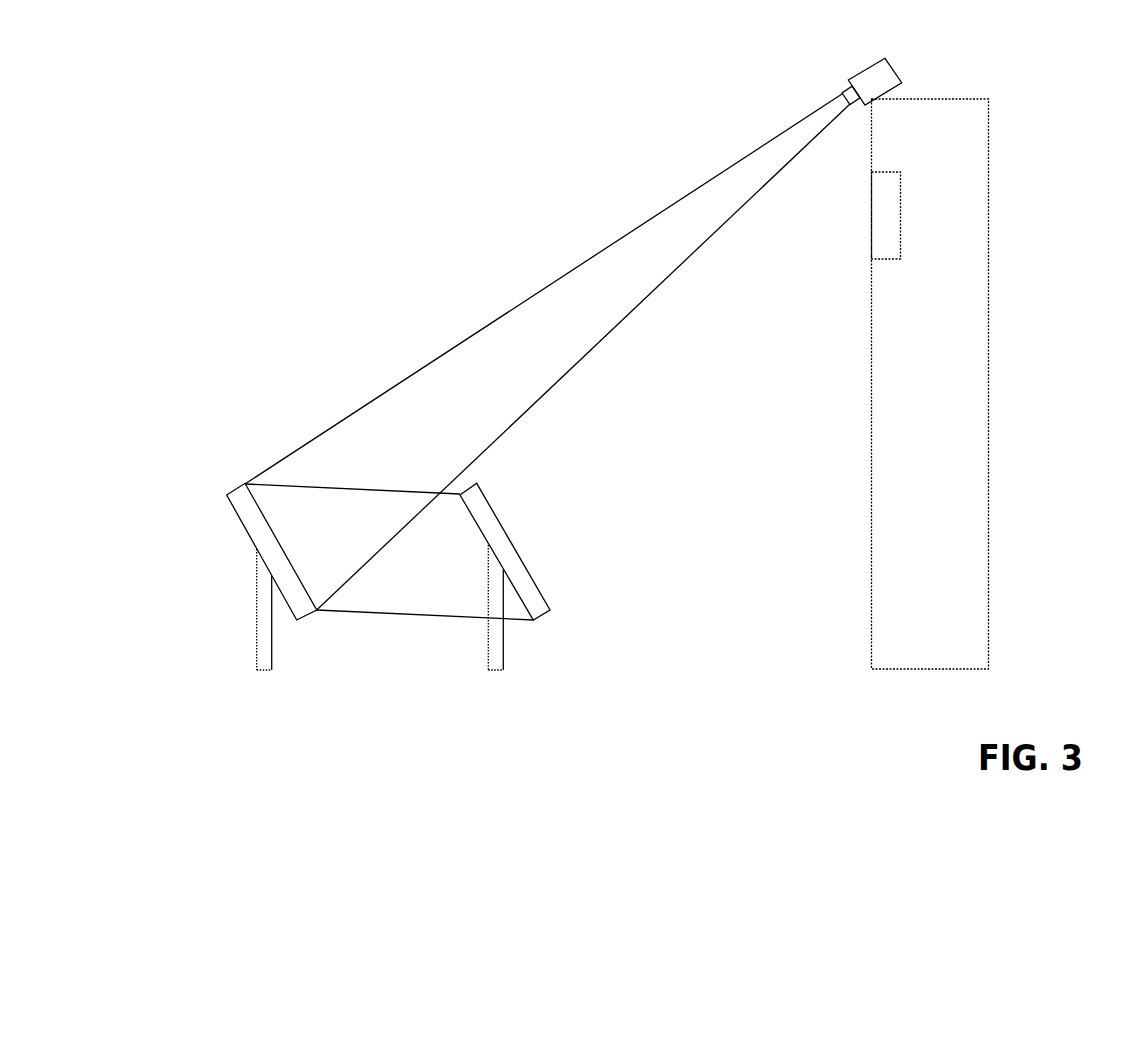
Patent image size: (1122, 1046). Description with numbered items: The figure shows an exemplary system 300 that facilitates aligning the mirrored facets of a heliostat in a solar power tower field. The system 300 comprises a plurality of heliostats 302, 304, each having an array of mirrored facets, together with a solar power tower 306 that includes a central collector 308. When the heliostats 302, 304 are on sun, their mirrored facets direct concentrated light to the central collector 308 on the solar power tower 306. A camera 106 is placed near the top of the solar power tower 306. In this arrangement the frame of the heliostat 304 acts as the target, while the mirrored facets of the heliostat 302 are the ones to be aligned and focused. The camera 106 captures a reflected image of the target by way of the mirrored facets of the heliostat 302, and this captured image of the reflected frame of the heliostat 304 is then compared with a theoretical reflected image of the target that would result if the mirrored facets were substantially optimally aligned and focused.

The system 300 is at (335, 164).
The camera 106 is at (867, 64).
The heliostat 302 is at (272, 670).
The heliostat 304 is at (503, 670).
The solar power tower 306 is at (988, 170).
The central collector 308 is at (872, 230).